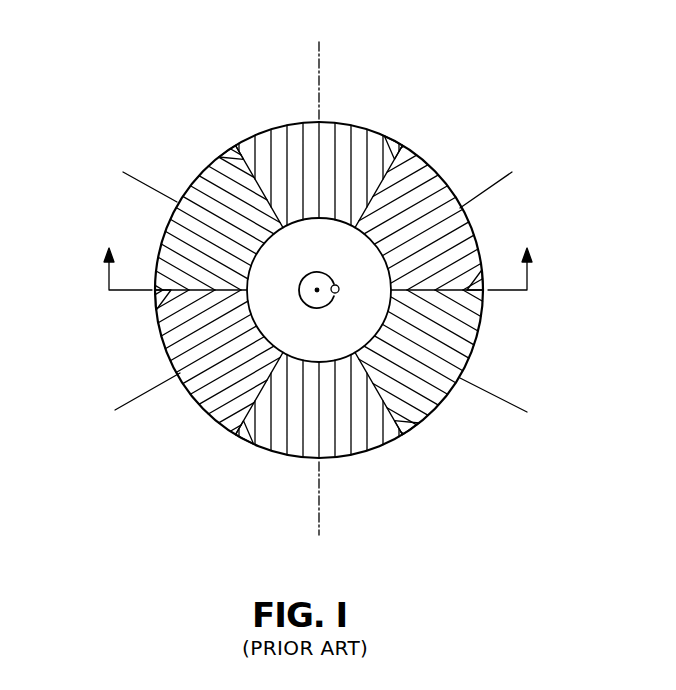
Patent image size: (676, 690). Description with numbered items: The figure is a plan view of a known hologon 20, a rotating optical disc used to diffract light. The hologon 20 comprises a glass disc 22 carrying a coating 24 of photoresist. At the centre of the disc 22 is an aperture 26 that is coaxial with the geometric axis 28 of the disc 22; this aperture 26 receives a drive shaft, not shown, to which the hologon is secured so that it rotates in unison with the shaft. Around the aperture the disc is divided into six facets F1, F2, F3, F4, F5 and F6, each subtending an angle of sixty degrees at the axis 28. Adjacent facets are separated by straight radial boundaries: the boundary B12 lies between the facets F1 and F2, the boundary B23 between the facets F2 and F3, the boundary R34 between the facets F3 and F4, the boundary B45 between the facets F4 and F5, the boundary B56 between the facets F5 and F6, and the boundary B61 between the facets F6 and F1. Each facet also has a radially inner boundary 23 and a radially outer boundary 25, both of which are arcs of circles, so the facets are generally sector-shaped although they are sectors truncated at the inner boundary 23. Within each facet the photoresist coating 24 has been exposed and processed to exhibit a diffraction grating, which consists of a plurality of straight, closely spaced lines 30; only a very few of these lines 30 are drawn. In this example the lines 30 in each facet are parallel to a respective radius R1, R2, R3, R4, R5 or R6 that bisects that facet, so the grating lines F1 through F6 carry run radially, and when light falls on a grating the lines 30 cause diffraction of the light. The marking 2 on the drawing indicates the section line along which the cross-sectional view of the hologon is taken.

The hologon 20 is at (106, 209).
The glass disc 22 is at (287, 310).
The radially inner boundary 23 is at (302, 225).
The coating of photoresist 24 is at (437, 189).
The radially outer boundary 25 is at (342, 125).
The aperture 26 is at (339, 289).
The geometric axis 28 is at (318, 292).
The lines 30 is at (205, 170).
The section line 2- 2 is at (318, 280).
The radius bisecting facet F1 R1 is at (318, 60).
The radius bisecting facet F2 R2 is at (515, 172).
The radius bisecting facet F3 R3 is at (519, 410).
The radius bisecting facet F4 R4 is at (322, 505).
The radius bisecting facet F5 R5 is at (120, 406).
The radius bisecting facet F6 R6 is at (117, 172).
The facet F1 is at (293, 128).
The facet F2 is at (458, 218).
The facet F3 is at (456, 378).
The facet F4 is at (325, 440).
The facet F5 is at (192, 371).
The facet F6 is at (190, 200).
The radial boundary B12 is at (410, 148).
The radial boundary B23 is at (480, 272).
The radial boundary R34 is at (410, 432).
The radial boundary B45 is at (250, 440).
The radial boundary B56 is at (158, 278).
The radial boundary B61 is at (250, 150).